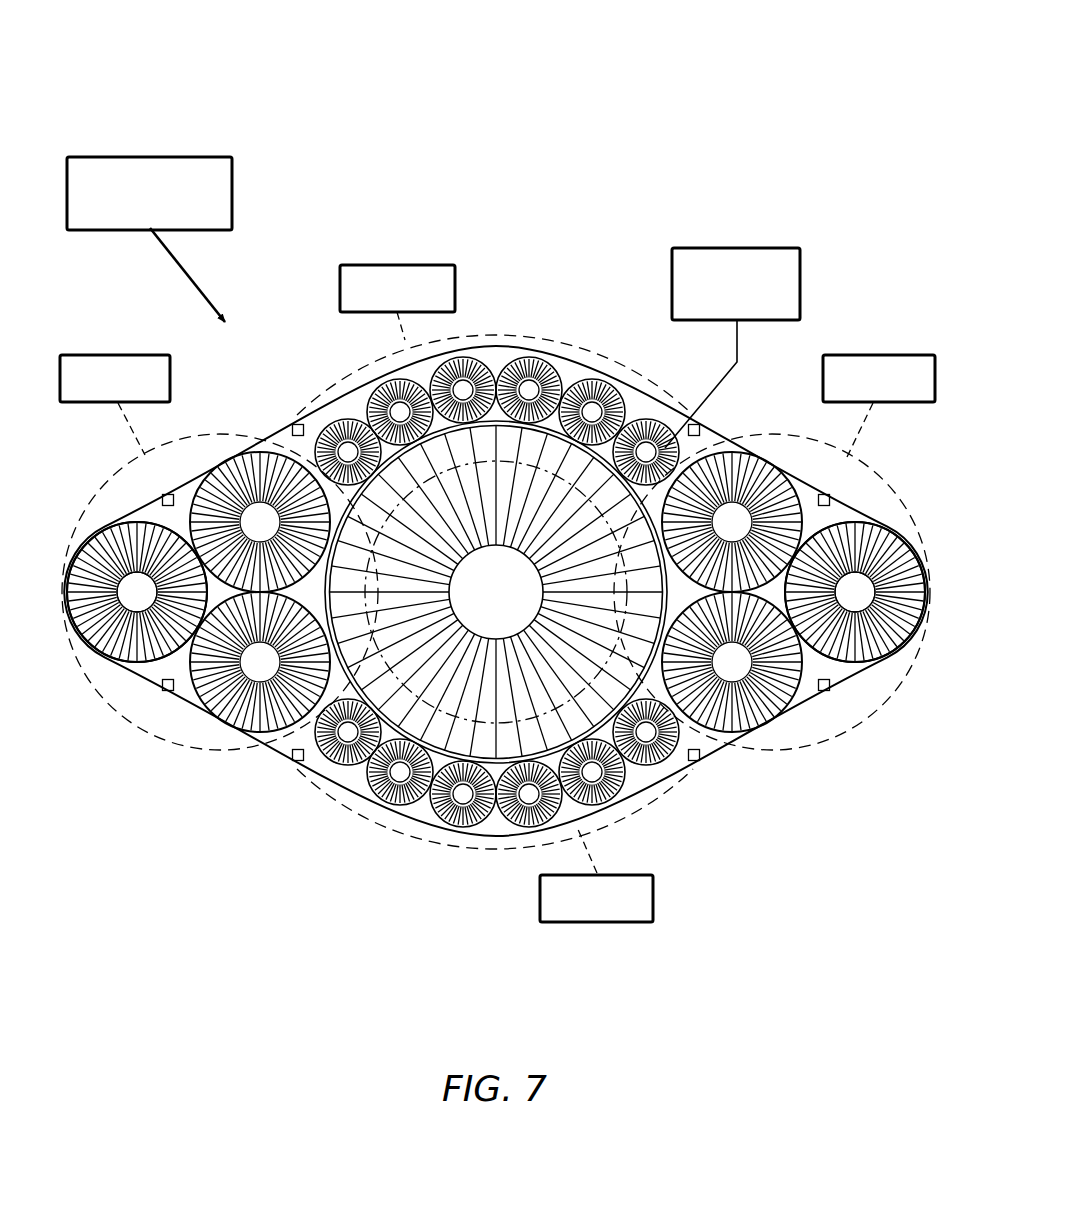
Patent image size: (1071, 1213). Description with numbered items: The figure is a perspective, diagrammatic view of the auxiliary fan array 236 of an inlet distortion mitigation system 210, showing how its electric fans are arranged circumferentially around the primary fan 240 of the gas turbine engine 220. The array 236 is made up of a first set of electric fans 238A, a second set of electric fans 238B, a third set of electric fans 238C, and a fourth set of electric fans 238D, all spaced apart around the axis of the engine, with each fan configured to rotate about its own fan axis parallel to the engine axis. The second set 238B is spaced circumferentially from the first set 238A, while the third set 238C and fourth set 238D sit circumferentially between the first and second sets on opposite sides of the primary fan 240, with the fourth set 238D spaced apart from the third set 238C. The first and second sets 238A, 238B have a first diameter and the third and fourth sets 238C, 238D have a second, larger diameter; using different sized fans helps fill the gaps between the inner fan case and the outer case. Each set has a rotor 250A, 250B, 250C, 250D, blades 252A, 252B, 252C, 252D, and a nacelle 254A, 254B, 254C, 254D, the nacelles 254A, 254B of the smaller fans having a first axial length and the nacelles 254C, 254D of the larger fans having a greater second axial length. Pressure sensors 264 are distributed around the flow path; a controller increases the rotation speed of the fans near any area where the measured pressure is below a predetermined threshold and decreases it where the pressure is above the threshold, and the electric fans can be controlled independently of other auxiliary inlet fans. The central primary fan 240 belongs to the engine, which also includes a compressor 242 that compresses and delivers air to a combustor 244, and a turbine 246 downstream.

The vehicle propulsion assembly 210 is at (233, 87).
The primary fan 220 is at (622, 412).
The auxiliary fan array 236 is at (232, 190).
The first set of electric fans 238A is at (393, 265).
The second set of electric fans 238B is at (627, 923).
The third set of electric fans 238C is at (118, 355).
The fourth set of electric fans 238D is at (877, 356).
The primary fan 240 is at (737, 248).
The compressor 242 is at (513, 605).
The combustor 244 is at (580, 453).
The turbine 246 is at (735, 450).
The rotor 250A is at (407, 393).
The rotor 250B is at (500, 815).
The rotor 250C is at (132, 582).
The rotor 250D is at (858, 612).
The blades 252A is at (490, 337).
The blades 252B is at (617, 800).
The blades 252C is at (135, 512).
The blades 252D is at (897, 515).
The nacelle 254A is at (487, 353).
The nacelle 254B is at (558, 823).
The nacelle 254C is at (153, 660).
The nacelle 254D is at (840, 667).
The sensors 264 is at (170, 487).